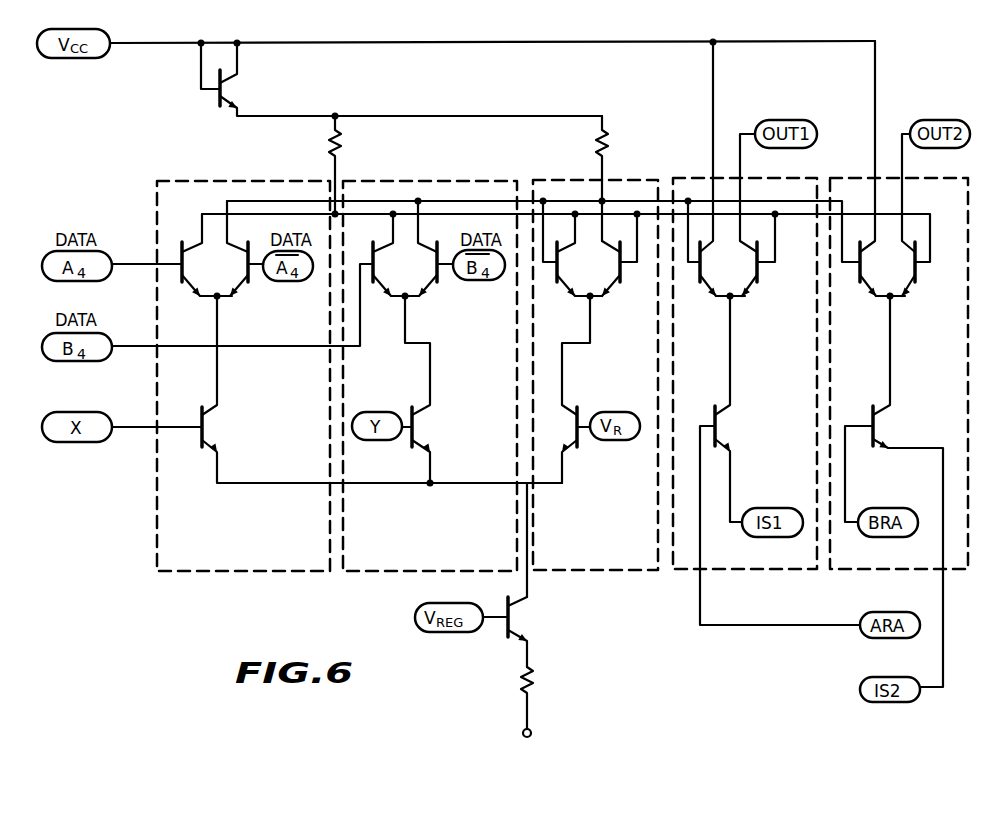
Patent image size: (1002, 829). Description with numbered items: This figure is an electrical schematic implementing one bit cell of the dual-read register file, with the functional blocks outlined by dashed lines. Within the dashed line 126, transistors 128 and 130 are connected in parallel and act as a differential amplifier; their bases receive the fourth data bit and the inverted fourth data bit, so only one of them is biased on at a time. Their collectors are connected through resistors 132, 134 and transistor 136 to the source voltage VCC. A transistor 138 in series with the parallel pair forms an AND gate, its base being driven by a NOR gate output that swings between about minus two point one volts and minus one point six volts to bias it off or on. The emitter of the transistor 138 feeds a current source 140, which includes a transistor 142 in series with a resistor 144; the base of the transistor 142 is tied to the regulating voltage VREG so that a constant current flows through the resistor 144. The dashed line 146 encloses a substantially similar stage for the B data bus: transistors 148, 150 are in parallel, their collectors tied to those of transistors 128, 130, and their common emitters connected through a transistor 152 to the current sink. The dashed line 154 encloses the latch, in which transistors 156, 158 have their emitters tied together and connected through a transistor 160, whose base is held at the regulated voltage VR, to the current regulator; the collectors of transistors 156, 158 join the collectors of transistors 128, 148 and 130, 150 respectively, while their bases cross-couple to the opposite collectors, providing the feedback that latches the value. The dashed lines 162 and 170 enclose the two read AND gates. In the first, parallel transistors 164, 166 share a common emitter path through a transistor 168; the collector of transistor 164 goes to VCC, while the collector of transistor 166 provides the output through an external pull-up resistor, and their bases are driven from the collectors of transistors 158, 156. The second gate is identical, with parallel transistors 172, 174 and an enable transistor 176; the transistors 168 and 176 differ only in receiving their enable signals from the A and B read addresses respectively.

The dashed line 126 is at (257, 575).
The transistor 128 is at (192, 284).
The transistor 130 is at (244, 284).
The resistor 132 is at (341, 144).
The resistor 134 is at (608, 136).
The transistor 136 is at (226, 91).
The transistor 138 is at (208, 421).
The current source 140 is at (568, 624).
The transistor 142 is at (515, 621).
The resistor 144 is at (535, 689).
The dashed line 146 is at (415, 575).
The transistor 148 is at (383, 284).
The transistor 150 is at (432, 284).
The transistor 152 is at (420, 421).
The dashed line 154 is at (648, 572).
The transistor 156 is at (567, 284).
The transistor 158 is at (614, 284).
The transistor 160 is at (567, 418).
The dashed line 162 is at (681, 572).
The transistor 164 is at (710, 284).
The transistor 166 is at (752, 284).
The transistor 168 is at (722, 421).
The dashed line 170 is at (957, 572).
The transistor 172 is at (870, 284).
The transistor 174 is at (910, 284).
The transistor 176 is at (880, 421).